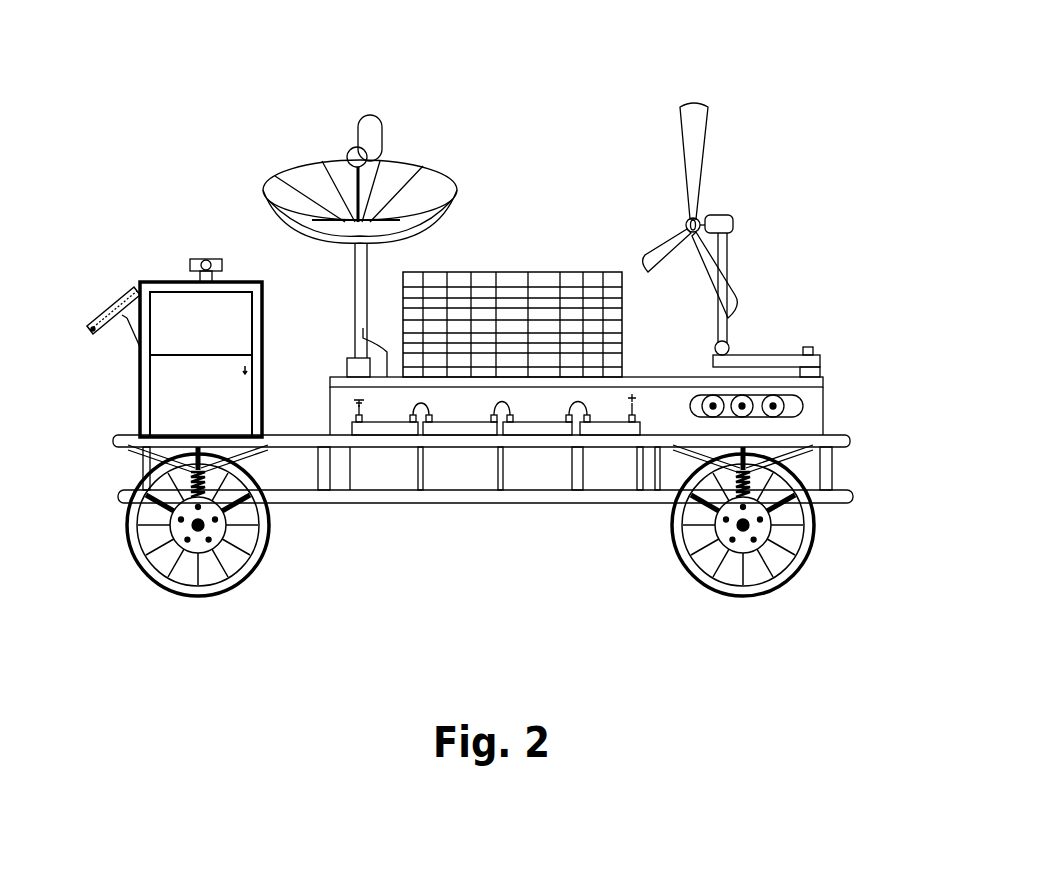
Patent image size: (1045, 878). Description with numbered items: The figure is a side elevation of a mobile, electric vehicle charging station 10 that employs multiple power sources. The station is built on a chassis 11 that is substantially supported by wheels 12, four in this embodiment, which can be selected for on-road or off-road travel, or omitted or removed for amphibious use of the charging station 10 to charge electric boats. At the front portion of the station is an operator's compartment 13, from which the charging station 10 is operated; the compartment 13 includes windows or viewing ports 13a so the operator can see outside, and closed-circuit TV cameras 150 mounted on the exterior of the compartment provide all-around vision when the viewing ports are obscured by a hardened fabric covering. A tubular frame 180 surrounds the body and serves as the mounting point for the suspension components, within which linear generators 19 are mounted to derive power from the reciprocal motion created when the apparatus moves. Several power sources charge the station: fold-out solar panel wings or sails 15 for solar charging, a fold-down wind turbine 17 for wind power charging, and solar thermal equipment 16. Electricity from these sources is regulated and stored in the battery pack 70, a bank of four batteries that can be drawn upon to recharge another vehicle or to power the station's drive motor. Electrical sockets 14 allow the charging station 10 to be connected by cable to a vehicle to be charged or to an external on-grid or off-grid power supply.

The mobile electric vehicle charging station 10 is at (150, 88).
The chassis 11 is at (288, 466).
The wheels 12 is at (130, 565).
The operator's compartment 13 is at (128, 380).
The viewing ports 13a is at (92, 314).
The electrical sockets 14 is at (803, 403).
The fold-out solar panel wings 15 is at (580, 272).
The solar thermal equipment 16 is at (425, 165).
The fold-down wind turbine 17 is at (735, 225).
The linear generators 19 is at (185, 490).
The battery pack 70 is at (387, 418).
The closed-circuit TV cameras 150 is at (193, 262).
The tubular frame 180 is at (118, 492).